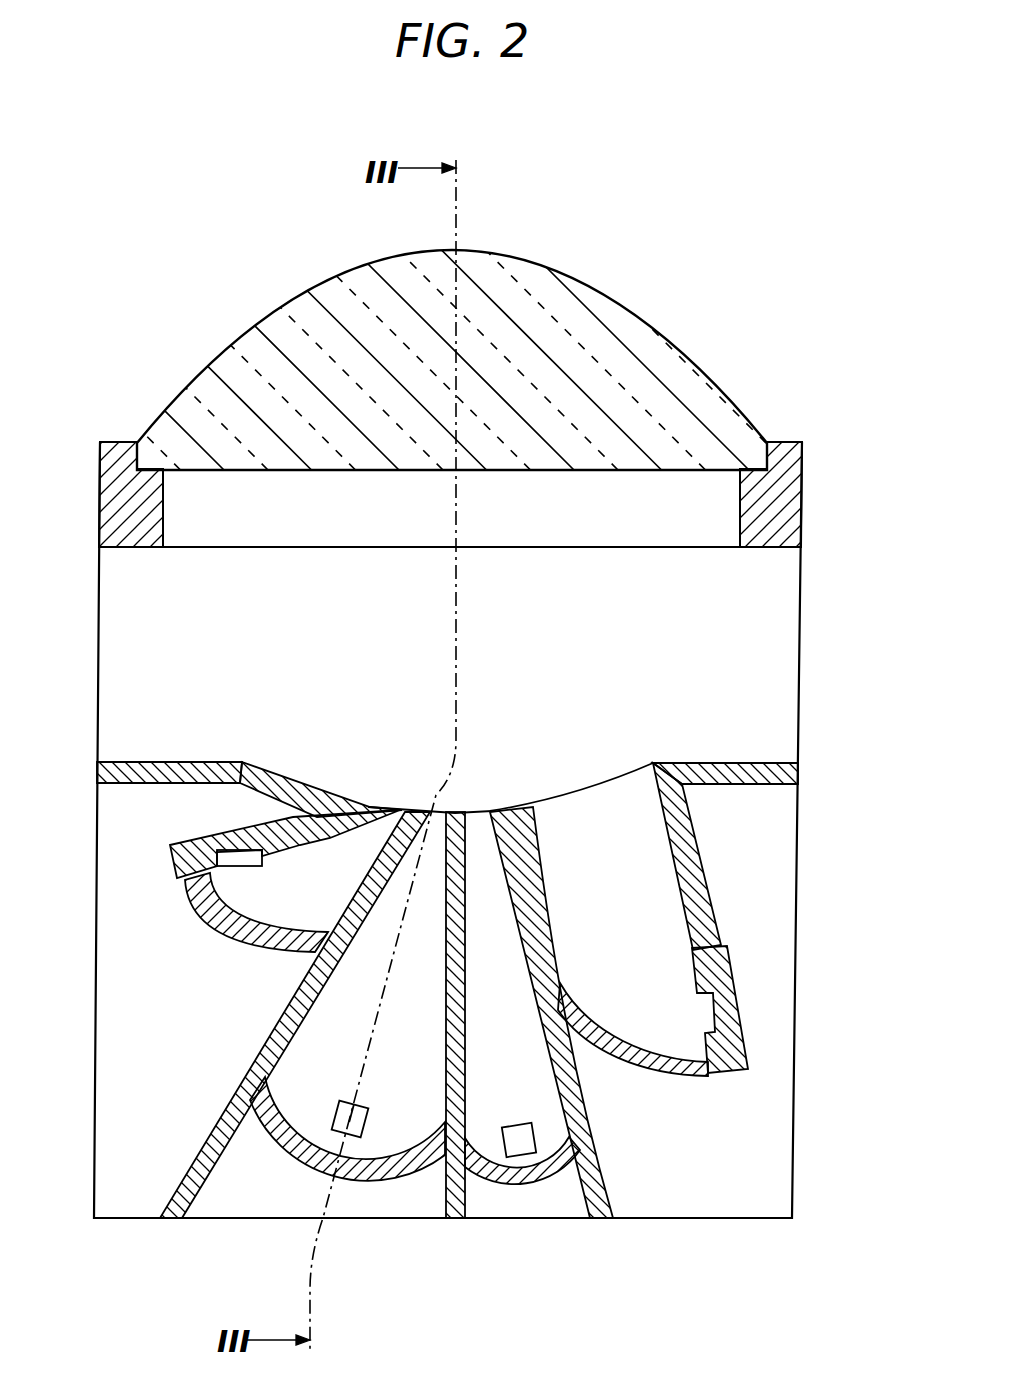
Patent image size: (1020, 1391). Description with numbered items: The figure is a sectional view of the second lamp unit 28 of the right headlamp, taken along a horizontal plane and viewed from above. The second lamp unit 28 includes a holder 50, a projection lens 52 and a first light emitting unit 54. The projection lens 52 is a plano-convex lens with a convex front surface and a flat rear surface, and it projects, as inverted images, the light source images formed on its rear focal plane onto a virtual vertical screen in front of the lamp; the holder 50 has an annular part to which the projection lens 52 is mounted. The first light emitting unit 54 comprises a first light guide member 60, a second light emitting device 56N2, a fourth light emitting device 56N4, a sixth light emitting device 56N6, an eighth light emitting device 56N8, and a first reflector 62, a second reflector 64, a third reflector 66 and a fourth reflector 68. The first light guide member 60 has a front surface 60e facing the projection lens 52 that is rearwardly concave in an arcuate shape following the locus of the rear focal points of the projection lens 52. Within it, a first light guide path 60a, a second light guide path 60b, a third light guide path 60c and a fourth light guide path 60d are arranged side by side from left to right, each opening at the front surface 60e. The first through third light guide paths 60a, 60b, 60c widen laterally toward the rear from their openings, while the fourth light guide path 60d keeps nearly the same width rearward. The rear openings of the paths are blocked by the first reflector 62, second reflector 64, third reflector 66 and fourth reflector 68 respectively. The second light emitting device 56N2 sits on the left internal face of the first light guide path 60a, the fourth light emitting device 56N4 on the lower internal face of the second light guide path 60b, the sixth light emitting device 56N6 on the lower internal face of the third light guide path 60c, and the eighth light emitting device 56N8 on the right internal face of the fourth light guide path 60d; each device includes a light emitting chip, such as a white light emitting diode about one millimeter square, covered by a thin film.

The second lamp unit 28 is at (727, 216).
The holder 50 is at (803, 488).
The projection lens 52 is at (650, 322).
The first light emitting unit 54 is at (784, 745).
The first light guide member 60 is at (157, 762).
The first light guide path 60a is at (366, 823).
The second light guide path 60b is at (447, 990).
The third light guide path 60c is at (466, 883).
The fourth light guide path 60d is at (543, 867).
The front surface 60e is at (290, 780).
The second light emitting device 56N2 is at (238, 864).
The fourth light emitting device 56N4 is at (345, 1105).
The sixth light emitting device 56N6 is at (512, 1125).
The eighth light emitting device 56N8 is at (698, 1015).
The first reflector 62 is at (207, 905).
The second reflector 64 is at (378, 1180).
The third reflector 66 is at (540, 1185).
The fourth reflector 68 is at (628, 1060).